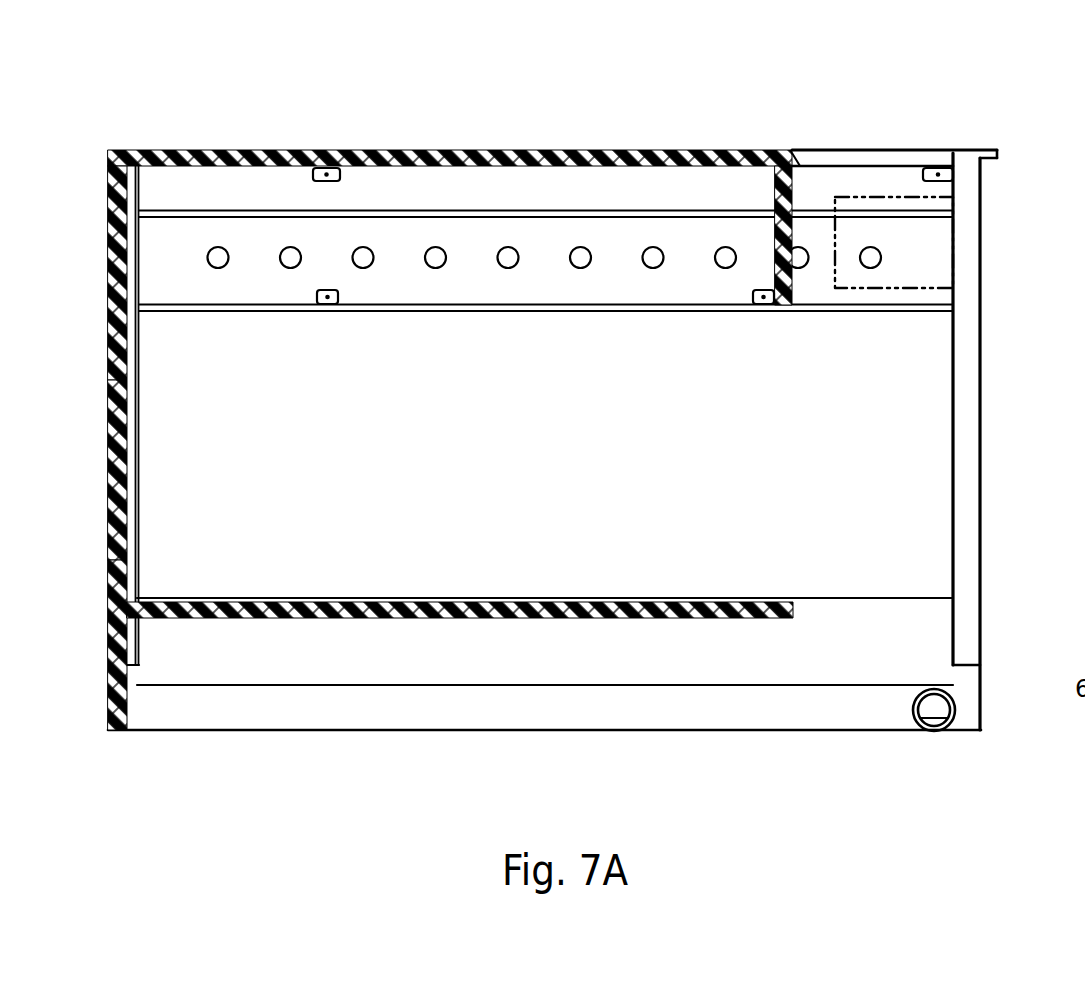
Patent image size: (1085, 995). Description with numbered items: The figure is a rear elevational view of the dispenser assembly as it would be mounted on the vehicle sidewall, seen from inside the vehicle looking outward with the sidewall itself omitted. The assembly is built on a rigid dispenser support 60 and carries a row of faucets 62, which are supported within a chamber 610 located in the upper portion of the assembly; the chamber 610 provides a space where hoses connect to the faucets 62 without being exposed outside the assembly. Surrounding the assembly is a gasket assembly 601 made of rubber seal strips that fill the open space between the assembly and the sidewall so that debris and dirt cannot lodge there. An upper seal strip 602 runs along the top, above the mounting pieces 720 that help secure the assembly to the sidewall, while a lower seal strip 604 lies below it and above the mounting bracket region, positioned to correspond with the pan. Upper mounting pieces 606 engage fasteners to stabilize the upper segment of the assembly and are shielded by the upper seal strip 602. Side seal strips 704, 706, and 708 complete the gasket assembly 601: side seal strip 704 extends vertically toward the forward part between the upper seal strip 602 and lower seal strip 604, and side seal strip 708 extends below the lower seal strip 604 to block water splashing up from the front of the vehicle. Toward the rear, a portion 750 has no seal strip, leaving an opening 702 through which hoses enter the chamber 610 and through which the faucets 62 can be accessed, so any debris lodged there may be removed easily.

The rigid dispenser support 60 is at (962, 732).
The faucets 62 is at (207, 255).
The gasket assembly 601 is at (108, 305).
The upper seal strip 602 is at (456, 150).
The lower seal strip 604 is at (545, 620).
The upper mounting pieces 606 is at (330, 305).
The chamber 610 is at (150, 283).
The opening 702 is at (932, 251).
The side seal strip 704 is at (108, 443).
The side seal strip 706 is at (786, 306).
The side seal strip 708 is at (108, 672).
The mounting pieces 720 is at (313, 174).
The portion 750 is at (852, 150).